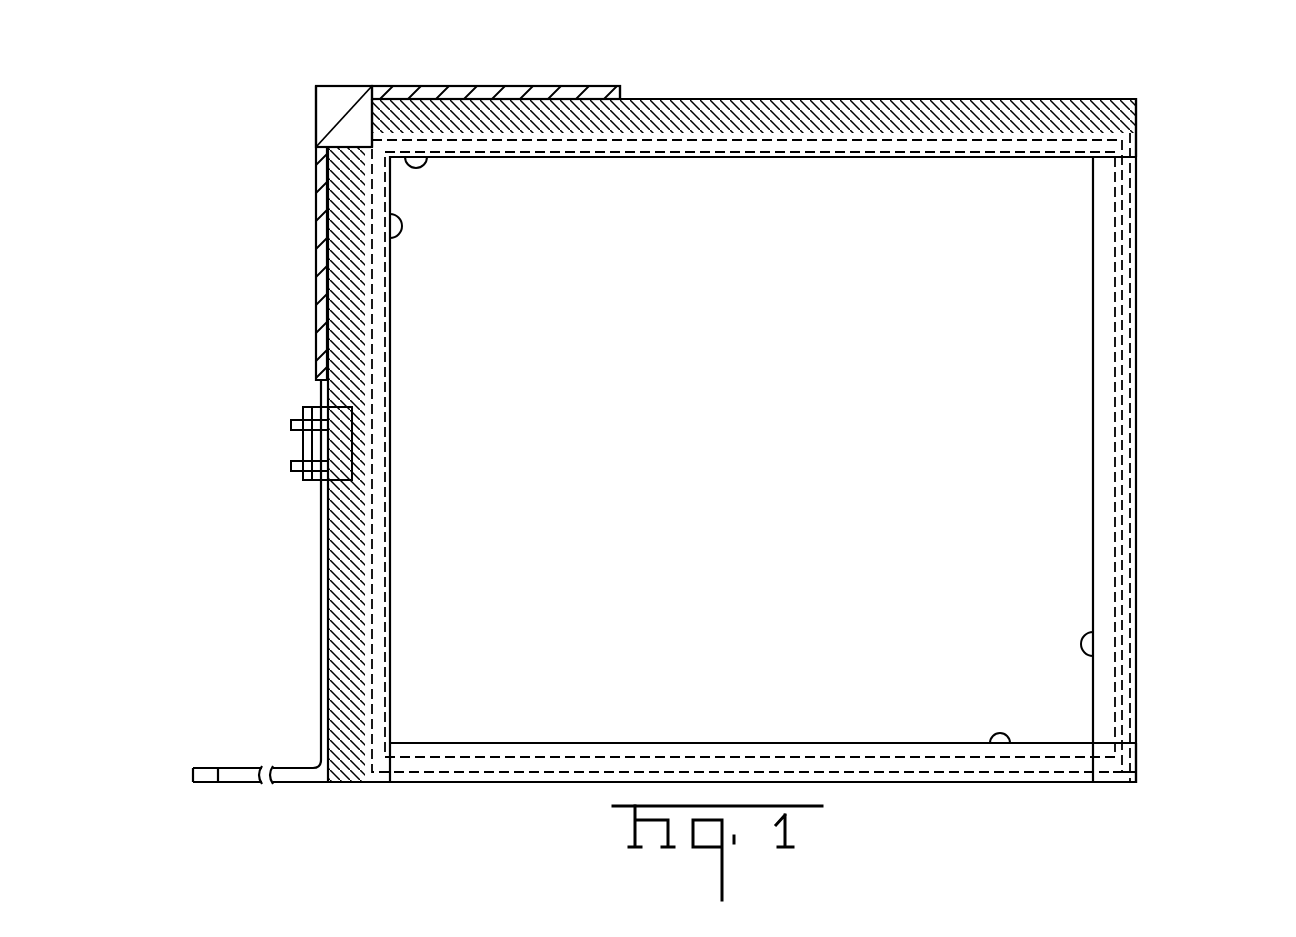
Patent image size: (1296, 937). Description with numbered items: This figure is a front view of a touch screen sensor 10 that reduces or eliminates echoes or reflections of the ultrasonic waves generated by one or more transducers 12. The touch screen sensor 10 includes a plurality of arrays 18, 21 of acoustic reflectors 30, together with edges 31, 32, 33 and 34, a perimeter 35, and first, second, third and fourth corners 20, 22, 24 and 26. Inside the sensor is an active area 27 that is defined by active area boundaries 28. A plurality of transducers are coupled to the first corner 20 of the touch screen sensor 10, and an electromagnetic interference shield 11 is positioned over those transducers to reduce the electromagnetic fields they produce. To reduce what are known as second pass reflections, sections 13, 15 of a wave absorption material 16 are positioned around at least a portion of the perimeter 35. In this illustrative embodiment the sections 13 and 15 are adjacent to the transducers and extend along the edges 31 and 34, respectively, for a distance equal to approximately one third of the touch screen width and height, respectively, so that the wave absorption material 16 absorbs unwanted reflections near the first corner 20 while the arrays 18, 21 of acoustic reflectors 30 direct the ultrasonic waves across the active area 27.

The touch screen sensor 10 is at (208, 273).
The electromagnetic interference shield 11 is at (335, 86).
The transducer 12 is at (314, 116).
The section of wave absorption material 13 is at (570, 86).
The section of wave absorption material 15 is at (322, 335).
The wave absorption material 16 is at (498, 86).
The array of acoustic reflectors 18 is at (305, 622).
The first corner 20 is at (298, 84).
The array of acoustic reflectors 21 is at (840, 92).
The second corner 22 is at (1152, 92).
The third corner 24 is at (325, 790).
The fourth corner 26 is at (1140, 795).
The active area 27 is at (1000, 372).
The active area boundaries 28 is at (415, 162).
The acoustic reflectors 30 is at (452, 105).
The edge 31 is at (645, 99).
The edge 32 is at (1137, 218).
The edge 33 is at (890, 784).
The edge 34 is at (320, 517).
The perimeter 35 is at (737, 85).